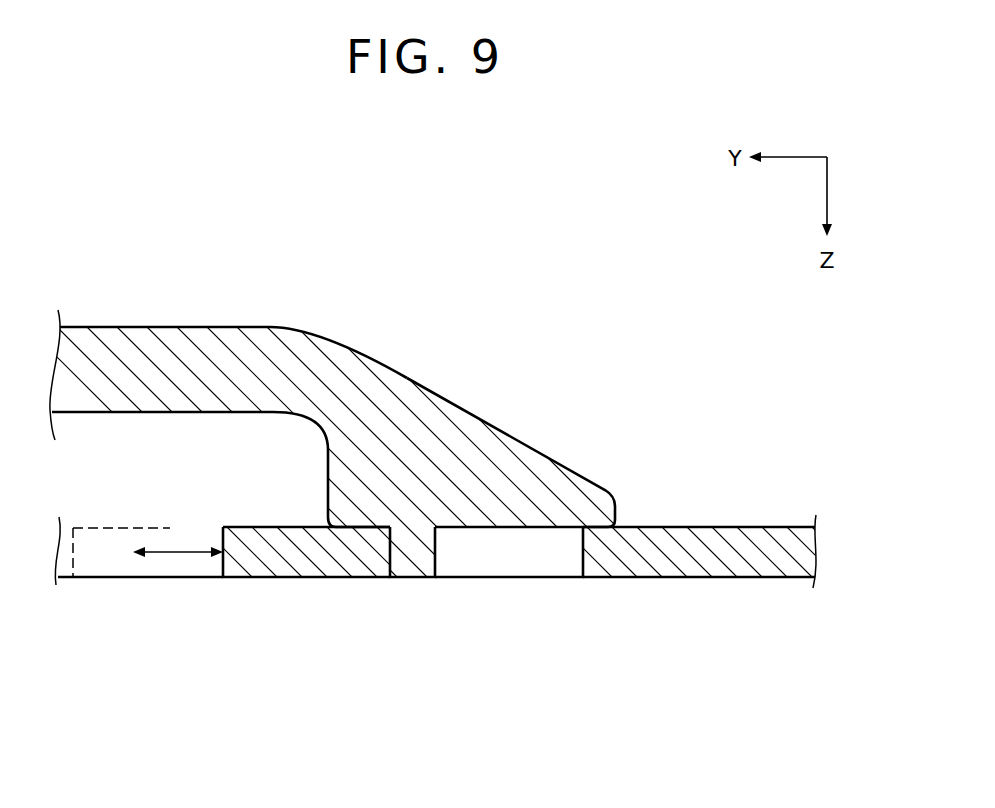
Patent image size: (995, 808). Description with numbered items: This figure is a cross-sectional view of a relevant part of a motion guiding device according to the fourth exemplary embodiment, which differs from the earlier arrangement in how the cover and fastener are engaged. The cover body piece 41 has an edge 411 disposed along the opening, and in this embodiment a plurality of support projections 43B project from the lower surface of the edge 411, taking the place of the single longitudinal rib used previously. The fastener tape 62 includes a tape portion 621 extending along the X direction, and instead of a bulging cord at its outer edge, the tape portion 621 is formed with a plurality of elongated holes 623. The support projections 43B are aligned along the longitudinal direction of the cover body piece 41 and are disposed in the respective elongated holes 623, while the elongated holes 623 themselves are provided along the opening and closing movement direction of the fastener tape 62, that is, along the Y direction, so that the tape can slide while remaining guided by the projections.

The cover body piece 41 is at (497, 354).
The edge 411 is at (530, 462).
The support projections 43B is at (410, 572).
The fastener tape 62 is at (495, 564).
The tape portion 621 is at (702, 578).
The elongated holes 623 is at (580, 553).